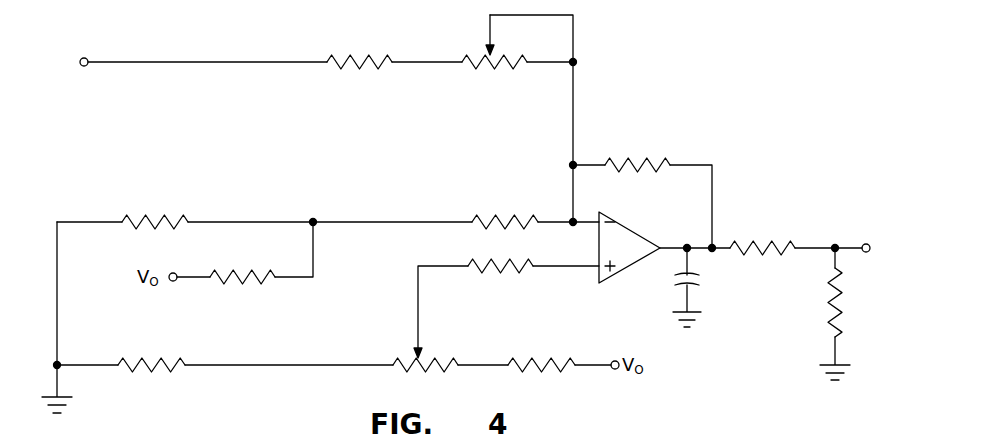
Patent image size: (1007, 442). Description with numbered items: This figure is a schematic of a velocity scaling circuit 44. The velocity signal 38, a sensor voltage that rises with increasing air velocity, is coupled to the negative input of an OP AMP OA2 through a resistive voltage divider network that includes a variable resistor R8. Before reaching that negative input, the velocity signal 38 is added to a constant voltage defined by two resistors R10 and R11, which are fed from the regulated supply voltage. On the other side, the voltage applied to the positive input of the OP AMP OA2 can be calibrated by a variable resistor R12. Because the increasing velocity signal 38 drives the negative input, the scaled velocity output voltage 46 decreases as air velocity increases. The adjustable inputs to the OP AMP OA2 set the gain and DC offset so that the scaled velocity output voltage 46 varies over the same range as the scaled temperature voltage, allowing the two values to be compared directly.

The velocity signal 38 is at (112, 62).
The variable resistor R8 is at (490, 67).
The velocity scaling circuit 44 is at (645, 83).
The resistor R11 is at (160, 222).
The resistor R10 is at (241, 283).
The OP AMP OA2 is at (633, 267).
The variable resistor R12 is at (449, 365).
The scaled velocity output voltage 46 is at (835, 246).